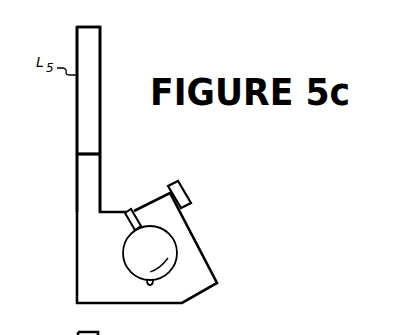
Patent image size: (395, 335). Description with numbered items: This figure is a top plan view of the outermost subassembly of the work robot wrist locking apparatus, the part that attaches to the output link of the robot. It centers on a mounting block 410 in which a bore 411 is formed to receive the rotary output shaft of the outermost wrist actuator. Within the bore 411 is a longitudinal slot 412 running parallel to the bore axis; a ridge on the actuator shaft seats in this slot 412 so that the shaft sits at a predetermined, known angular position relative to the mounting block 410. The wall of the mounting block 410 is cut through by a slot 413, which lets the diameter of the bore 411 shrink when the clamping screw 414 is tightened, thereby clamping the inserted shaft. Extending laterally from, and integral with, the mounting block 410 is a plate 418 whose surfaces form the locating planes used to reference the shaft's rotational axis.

The mounting block 410 is at (148, 318).
The bore 411 is at (125, 250).
The longitudinal slot 412 is at (168, 258).
The slot 413 is at (130, 210).
The clamping screw 414 is at (169, 186).
The plate 418 is at (101, 136).